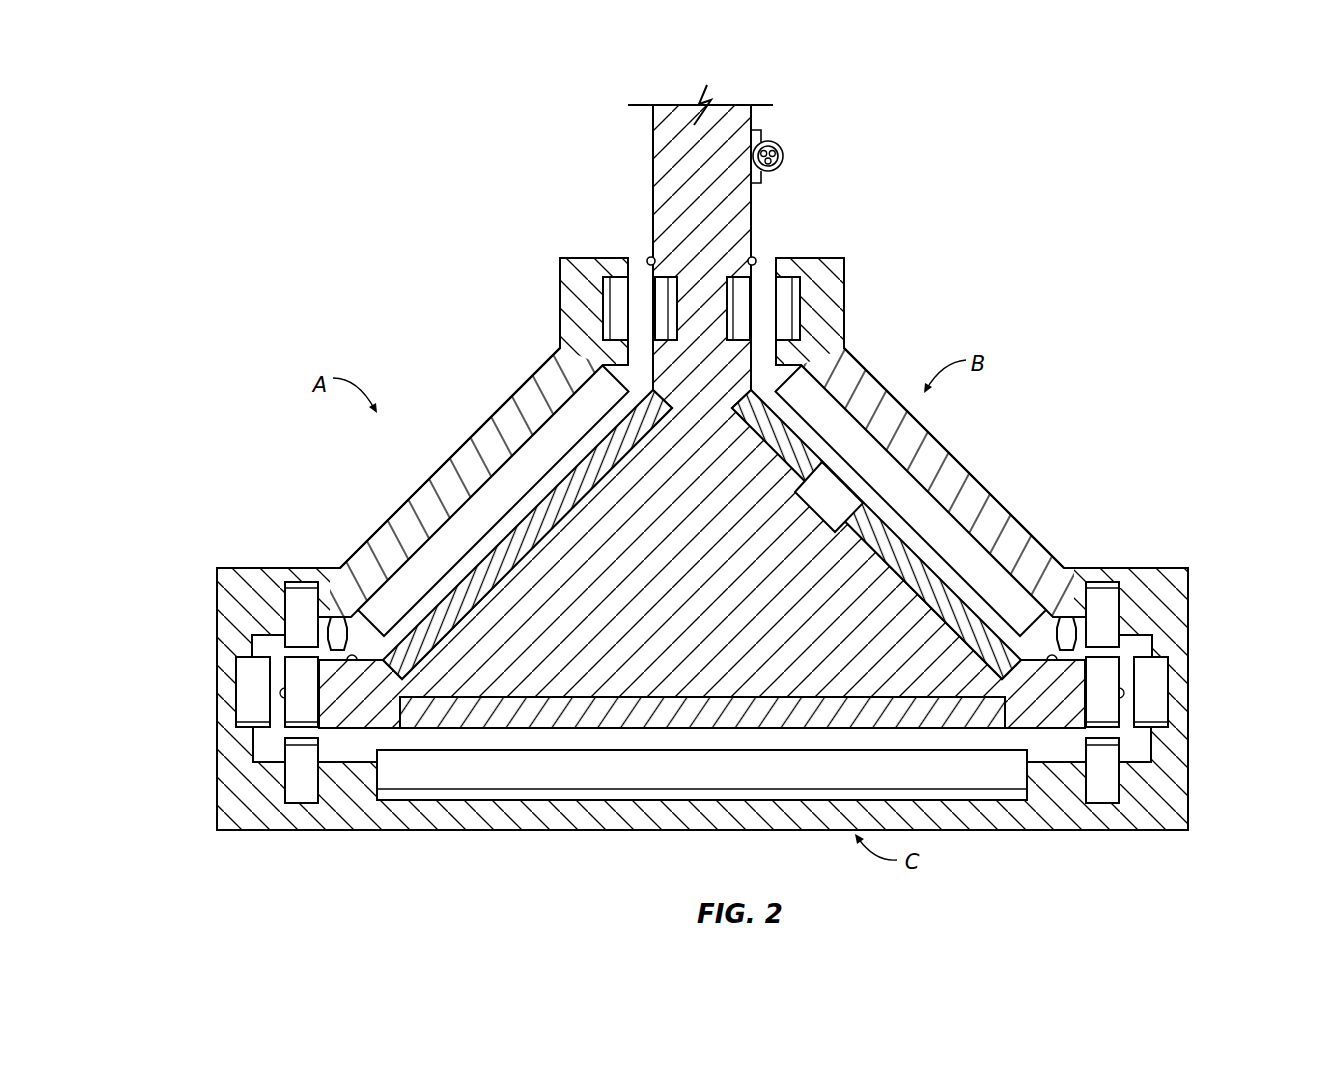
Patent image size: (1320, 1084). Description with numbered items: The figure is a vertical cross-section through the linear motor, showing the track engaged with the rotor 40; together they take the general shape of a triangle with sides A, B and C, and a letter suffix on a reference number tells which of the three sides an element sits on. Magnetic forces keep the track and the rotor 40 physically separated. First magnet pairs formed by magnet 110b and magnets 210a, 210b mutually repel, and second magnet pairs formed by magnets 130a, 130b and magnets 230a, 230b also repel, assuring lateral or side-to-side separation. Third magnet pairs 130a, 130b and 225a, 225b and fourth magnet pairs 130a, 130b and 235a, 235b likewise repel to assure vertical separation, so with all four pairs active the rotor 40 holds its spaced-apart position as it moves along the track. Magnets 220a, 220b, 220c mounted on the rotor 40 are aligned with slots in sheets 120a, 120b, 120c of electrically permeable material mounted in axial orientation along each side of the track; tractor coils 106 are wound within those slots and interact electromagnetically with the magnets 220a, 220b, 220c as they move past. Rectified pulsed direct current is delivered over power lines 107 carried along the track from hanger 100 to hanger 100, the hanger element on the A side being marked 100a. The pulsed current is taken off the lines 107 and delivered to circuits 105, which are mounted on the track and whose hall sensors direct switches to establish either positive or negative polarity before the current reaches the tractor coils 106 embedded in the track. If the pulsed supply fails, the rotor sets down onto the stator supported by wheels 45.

The rotor 40 is at (1190, 597).
The hanger 100 is at (654, 172).
The hanger (A side) 100a is at (662, 310).
The circuit 105 is at (813, 515).
The tractor coil 106 is at (757, 262).
The power line 107 is at (785, 157).
The first magnet (B side) 110b is at (743, 310).
The sheet of electrically permeable material (A side) 120a is at (507, 570).
The sheet of electrically permeable material (B side) 120b is at (892, 560).
The sheet of electrically permeable material (C side) 120c is at (680, 710).
The second magnet (A side) 130a is at (293, 710).
The second magnet (B side) 130b is at (1111, 710).
The magnet of first magnet pair (A side) 210a is at (617, 293).
The magnet of first magnet pair (B side) 210b is at (785, 303).
The rotor magnet (A side) 220a is at (550, 453).
The rotor magnet (B side) 220b is at (877, 475).
The rotor magnet (C side) 220c is at (633, 773).
The third-pair magnet (A side) 225a is at (307, 598).
The third-pair magnet (B side) 225b is at (1097, 598).
The second-pair magnet (A side) 230a is at (243, 675).
The second-pair magnet (B side) 230b is at (1161, 675).
The fourth-pair magnet (A side) 235a is at (298, 793).
The fourth-pair magnet (B side) 235b is at (1106, 793).
The wheel 45 is at (334, 617).